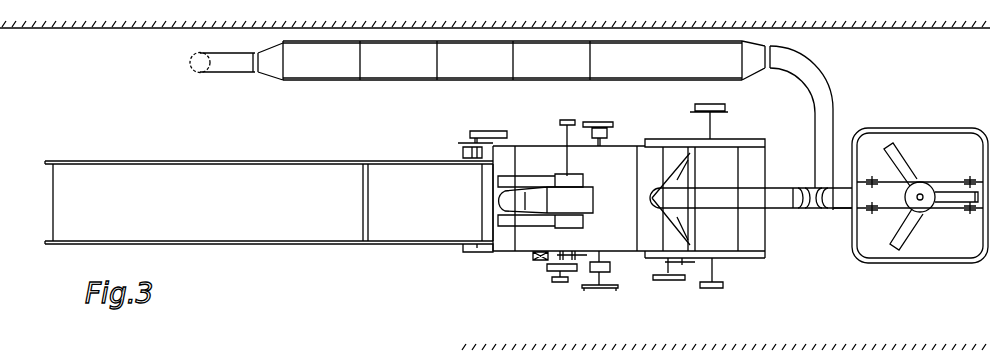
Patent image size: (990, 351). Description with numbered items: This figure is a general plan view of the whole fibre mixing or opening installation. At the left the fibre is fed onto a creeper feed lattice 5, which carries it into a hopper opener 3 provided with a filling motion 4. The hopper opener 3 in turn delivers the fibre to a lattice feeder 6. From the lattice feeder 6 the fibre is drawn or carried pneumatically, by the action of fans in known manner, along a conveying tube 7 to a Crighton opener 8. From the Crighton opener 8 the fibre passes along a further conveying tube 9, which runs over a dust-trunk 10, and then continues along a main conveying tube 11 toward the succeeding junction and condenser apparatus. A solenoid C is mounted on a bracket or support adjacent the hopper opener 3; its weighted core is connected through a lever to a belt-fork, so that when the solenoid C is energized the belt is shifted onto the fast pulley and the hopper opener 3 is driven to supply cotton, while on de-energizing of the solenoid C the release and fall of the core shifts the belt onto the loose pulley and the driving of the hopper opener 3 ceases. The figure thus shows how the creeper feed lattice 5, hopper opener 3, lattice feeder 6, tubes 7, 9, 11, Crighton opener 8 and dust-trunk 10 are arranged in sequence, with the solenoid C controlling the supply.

The hopper opener 3 is at (551, 205).
The filling motion 4 is at (429, 206).
The creeper feed lattice 5 is at (206, 202).
The lattice feeder 6 is at (671, 156).
The conveying tube 7 is at (771, 196).
The Crighton opener 8 is at (945, 145).
The conveying tube 9 is at (819, 72).
The dust-trunk 10 is at (422, 70).
The main conveying tube 11 is at (230, 66).
The solenoid C is at (530, 257).